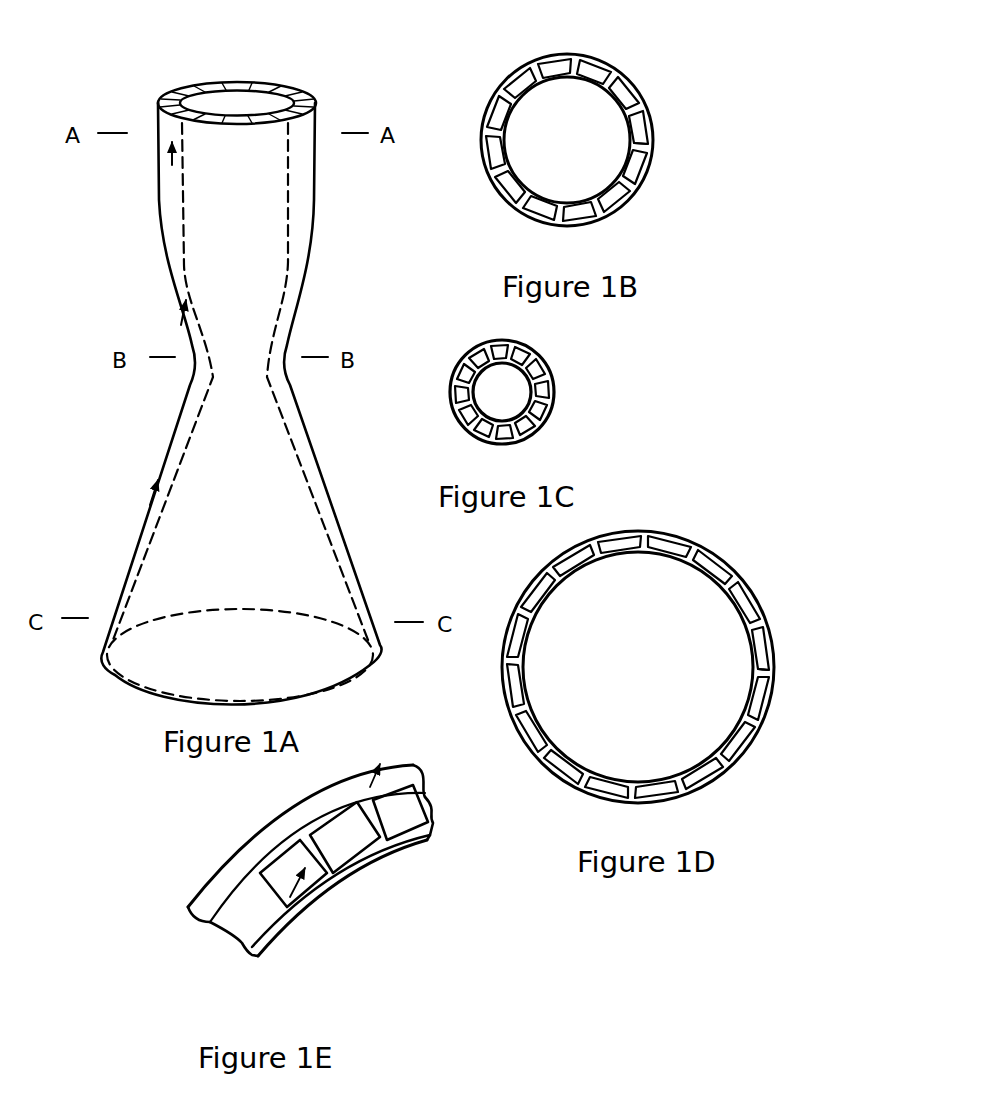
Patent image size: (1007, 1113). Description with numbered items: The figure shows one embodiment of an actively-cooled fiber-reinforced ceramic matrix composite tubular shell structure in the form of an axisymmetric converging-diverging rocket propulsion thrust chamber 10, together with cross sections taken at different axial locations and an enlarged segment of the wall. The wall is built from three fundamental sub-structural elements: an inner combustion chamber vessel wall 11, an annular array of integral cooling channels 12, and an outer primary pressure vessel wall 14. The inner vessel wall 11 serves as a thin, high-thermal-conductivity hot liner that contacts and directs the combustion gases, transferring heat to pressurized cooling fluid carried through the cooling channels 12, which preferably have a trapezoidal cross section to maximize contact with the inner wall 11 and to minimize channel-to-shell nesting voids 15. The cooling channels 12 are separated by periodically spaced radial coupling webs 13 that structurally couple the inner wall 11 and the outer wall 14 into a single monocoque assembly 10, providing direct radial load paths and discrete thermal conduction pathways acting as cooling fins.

In FIG. 1A, the thrust chamber 10 is at (208, 358).
In FIG. 1A, the inner combustion chamber vessel wall 11 is at (293, 443).
In FIG. 1B, the inner combustion chamber vessel wall 11 is at (619, 128).
In FIG. 1D, the inner combustion chamber vessel wall 11 is at (733, 625).
In FIG. 1E, the inner combustion chamber vessel wall 11 is at (364, 882).
In FIG. 1A, the cooling channels 12 is at (293, 97).
In FIG. 1B, the cooling channels 12 is at (623, 83).
In FIG. 1D, the cooling channels 12 is at (721, 568).
In FIG. 1E, the cooling channels 12 is at (342, 836).
In FIG. 1B, the radial coupling webs 13 is at (653, 143).
In FIG. 1D, the radial coupling webs 13 is at (773, 643).
In FIG. 1E, the radial coupling webs 13 is at (302, 920).
In FIG. 1A, the outer primary pressure vessel wall 14 is at (160, 260).
In FIG. 1B, the outer primary pressure vessel wall 14 is at (641, 183).
In FIG. 1D, the outer primary pressure vessel wall 14 is at (755, 750).
In FIG. 1E, the outer primary pressure vessel wall 14 is at (216, 903).
In FIG. 1E, the channel-to-shell nesting voids 15 is at (245, 873).